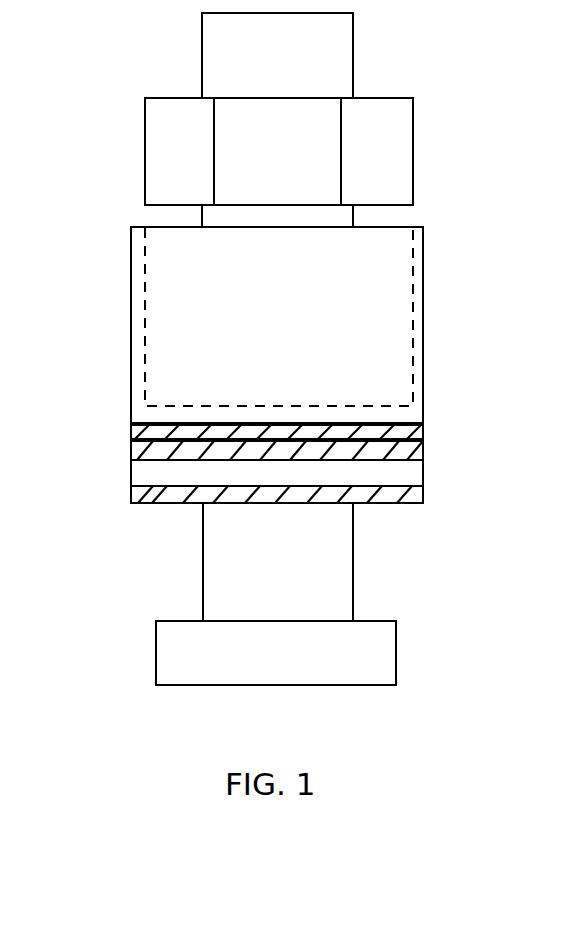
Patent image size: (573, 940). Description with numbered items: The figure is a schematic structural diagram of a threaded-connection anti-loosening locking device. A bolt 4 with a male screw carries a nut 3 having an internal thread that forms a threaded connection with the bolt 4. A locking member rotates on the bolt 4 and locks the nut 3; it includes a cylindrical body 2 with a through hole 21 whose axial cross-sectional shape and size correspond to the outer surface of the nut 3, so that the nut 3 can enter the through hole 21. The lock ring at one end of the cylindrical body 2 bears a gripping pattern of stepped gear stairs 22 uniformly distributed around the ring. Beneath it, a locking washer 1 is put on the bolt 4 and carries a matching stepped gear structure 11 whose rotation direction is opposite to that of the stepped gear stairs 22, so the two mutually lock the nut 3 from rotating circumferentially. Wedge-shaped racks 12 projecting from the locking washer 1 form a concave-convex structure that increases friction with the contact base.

The locking washer 1 is at (380, 476).
The stepped gear structure 11 is at (146, 452).
The wedge-shaped rack 12 is at (146, 497).
The cylindrical body 2 is at (423, 376).
The through hole 21 is at (411, 316).
The stepped gear stair 22 is at (412, 432).
The nut 3 is at (412, 164).
The bolt 4 is at (353, 583).